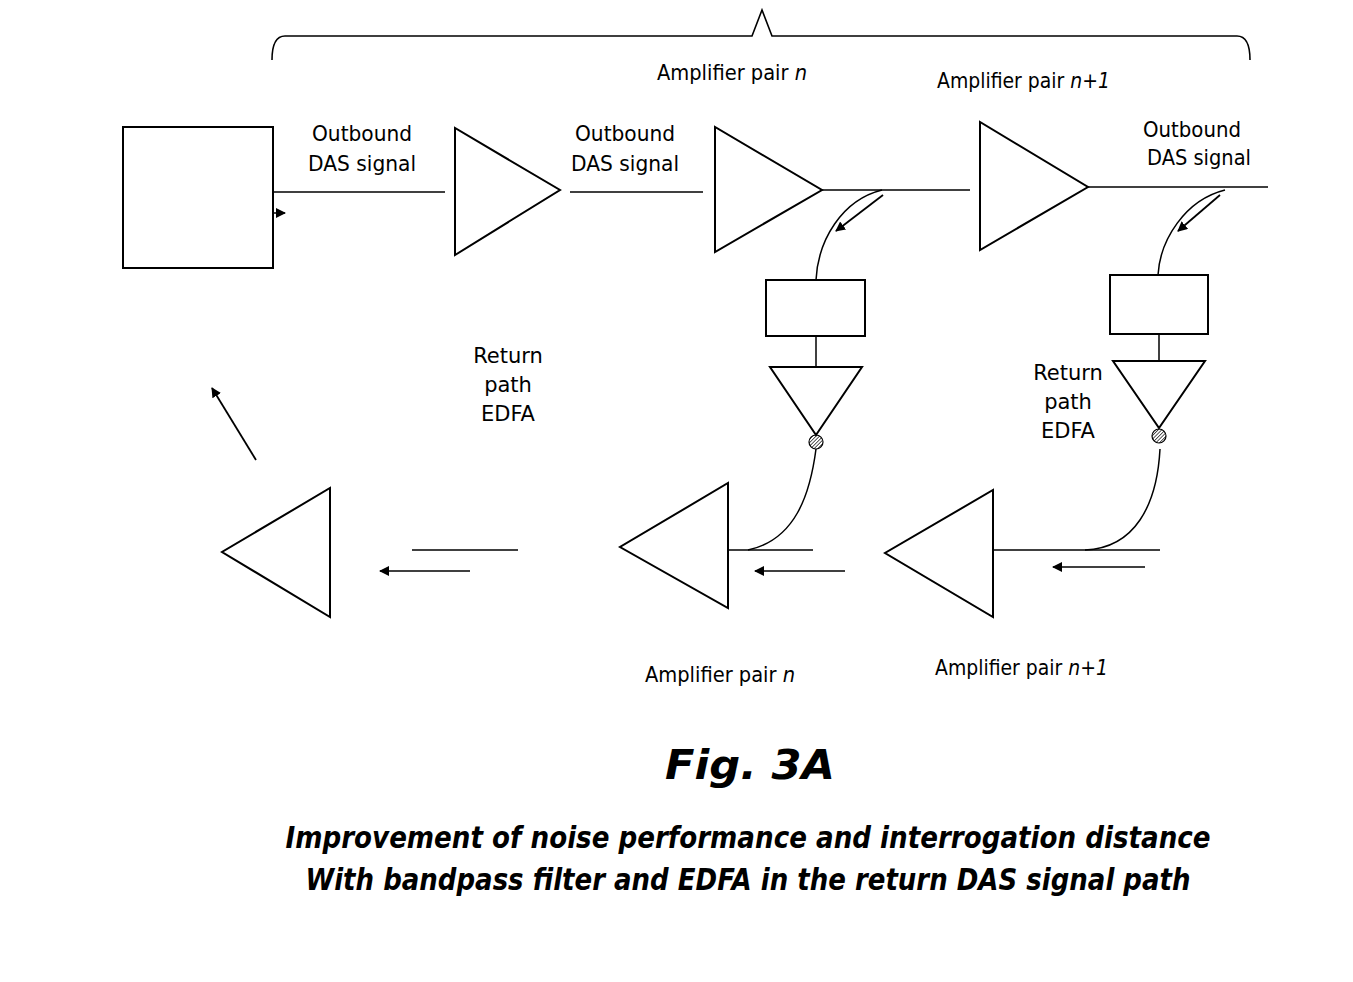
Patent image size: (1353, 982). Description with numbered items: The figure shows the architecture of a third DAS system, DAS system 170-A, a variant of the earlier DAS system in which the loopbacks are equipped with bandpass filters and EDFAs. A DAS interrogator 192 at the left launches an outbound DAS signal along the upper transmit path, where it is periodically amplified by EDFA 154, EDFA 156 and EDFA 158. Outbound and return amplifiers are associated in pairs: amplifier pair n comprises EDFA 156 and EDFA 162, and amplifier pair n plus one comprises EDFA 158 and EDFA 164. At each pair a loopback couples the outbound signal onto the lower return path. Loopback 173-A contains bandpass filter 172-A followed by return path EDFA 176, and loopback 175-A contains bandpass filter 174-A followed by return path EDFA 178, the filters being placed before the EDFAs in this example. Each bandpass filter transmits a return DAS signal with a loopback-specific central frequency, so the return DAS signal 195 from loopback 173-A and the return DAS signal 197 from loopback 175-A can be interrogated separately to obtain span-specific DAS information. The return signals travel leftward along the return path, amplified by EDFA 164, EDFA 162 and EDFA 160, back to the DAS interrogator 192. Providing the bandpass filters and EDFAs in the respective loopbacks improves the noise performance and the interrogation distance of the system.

The DAS system 170-A is at (761, 369).
The DAS interrogator 192 is at (204, 197).
The EDFA 154 is at (507, 191).
The EDFA 156 is at (768, 189).
The EDFA 158 is at (1034, 186).
The EDFA 160 is at (276, 552).
The EDFA 162 is at (674, 545).
The EDFA 164 is at (939, 553).
The bandpass filter 172-A is at (865, 328).
The bandpass filter 174-A is at (1200, 313).
The loopback 173-A is at (785, 370).
The loopback 175-A is at (1124, 370).
The EDFA 176 is at (838, 406).
The EDFA 178 is at (1178, 410).
The return DAS signal 195 is at (588, 403).
The return DAS signal 197 is at (1030, 420).